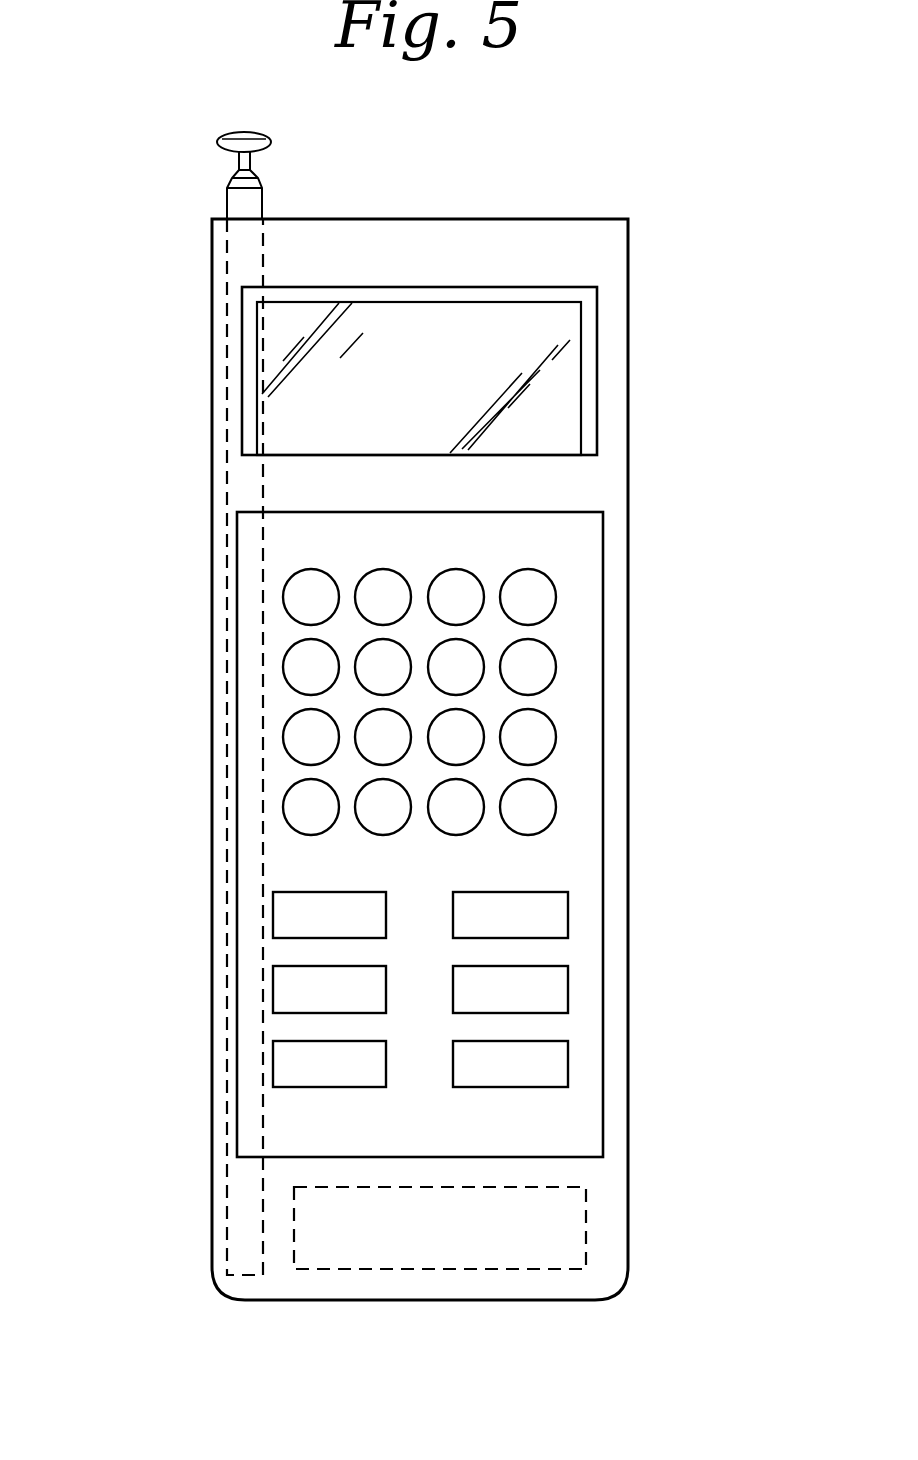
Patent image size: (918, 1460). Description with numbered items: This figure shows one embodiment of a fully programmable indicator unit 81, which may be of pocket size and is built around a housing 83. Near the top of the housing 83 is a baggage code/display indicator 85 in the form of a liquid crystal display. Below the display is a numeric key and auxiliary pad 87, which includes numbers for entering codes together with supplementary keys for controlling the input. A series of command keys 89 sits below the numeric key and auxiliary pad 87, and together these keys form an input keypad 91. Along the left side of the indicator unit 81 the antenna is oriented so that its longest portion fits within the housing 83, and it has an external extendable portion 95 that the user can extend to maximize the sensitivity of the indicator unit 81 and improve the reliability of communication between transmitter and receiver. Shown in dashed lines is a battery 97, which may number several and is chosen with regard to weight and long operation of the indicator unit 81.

The indicator unit 81 is at (658, 1156).
The housing 83 is at (614, 244).
The baggage code/display indicator 85 is at (466, 325).
The numeric key and auxiliary pad 87 is at (178, 548).
The command keys 89 is at (178, 862).
The input keypad 91 is at (103, 547).
The external extendable portion 95 is at (198, 126).
The battery 97 is at (226, 1222).